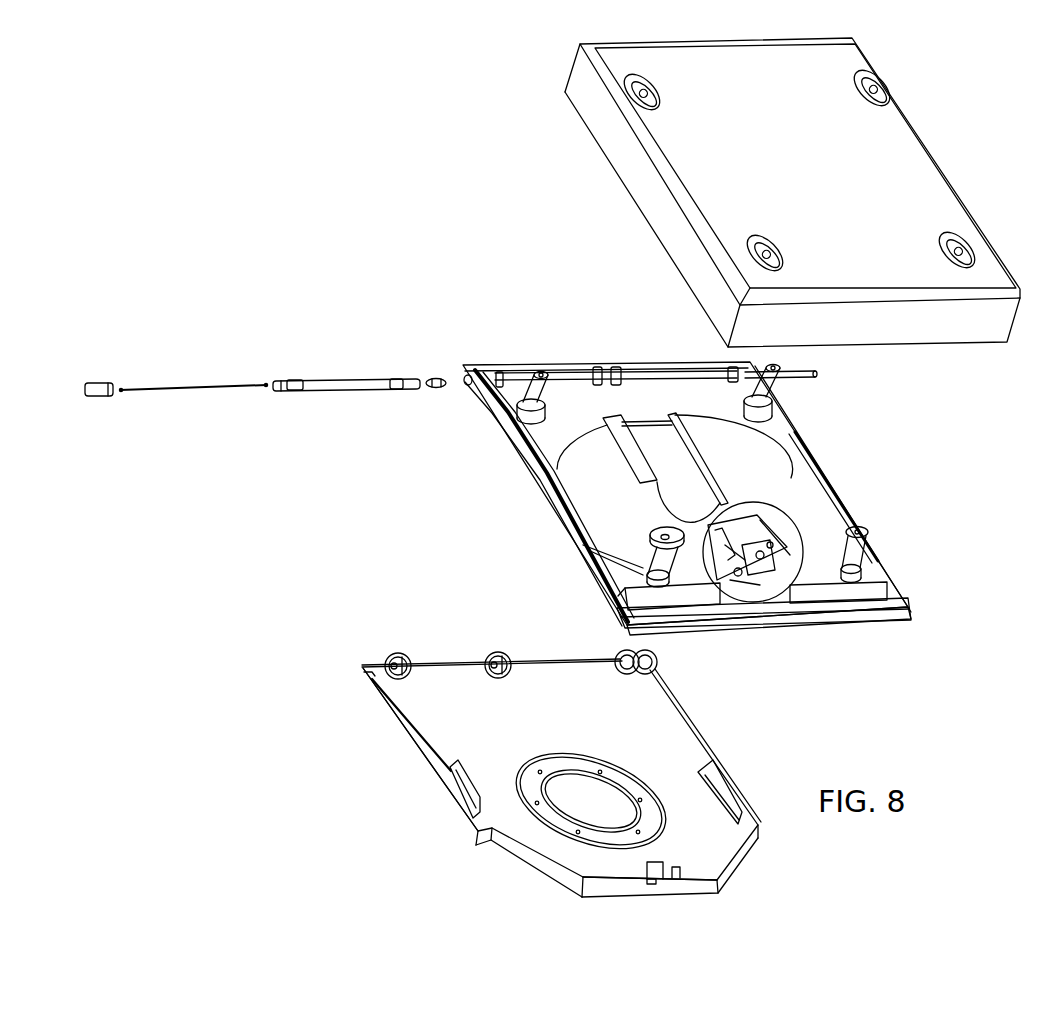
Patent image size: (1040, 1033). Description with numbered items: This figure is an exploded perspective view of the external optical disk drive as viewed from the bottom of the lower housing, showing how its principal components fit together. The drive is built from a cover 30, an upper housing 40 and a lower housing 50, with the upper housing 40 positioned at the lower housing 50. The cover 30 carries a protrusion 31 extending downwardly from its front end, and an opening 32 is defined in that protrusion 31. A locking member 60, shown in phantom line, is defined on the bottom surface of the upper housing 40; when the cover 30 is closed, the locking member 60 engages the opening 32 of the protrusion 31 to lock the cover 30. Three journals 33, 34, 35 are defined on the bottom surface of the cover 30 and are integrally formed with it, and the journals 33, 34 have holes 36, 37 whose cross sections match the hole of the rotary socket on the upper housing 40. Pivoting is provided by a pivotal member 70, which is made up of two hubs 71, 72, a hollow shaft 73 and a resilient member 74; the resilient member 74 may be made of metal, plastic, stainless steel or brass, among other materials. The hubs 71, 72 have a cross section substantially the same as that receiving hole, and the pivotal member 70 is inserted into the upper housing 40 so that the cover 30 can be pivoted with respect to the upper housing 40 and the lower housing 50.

The cover 30 is at (445, 793).
The protrusion 31 is at (692, 887).
The opening 32 is at (647, 882).
The journal 33 is at (395, 657).
The journal 34 is at (498, 653).
The journal 35 is at (655, 660).
The hole 36 is at (362, 665).
The hole 37 is at (460, 663).
The upper housing 40 is at (812, 468).
The lower housing 50 is at (603, 137).
The locking member 60 is at (775, 598).
The pivotal member 70 is at (297, 283).
The hub 71 is at (442, 375).
The hub 72 is at (93, 400).
The hollow shaft 73 is at (352, 378).
The resilient member 74 is at (177, 385).